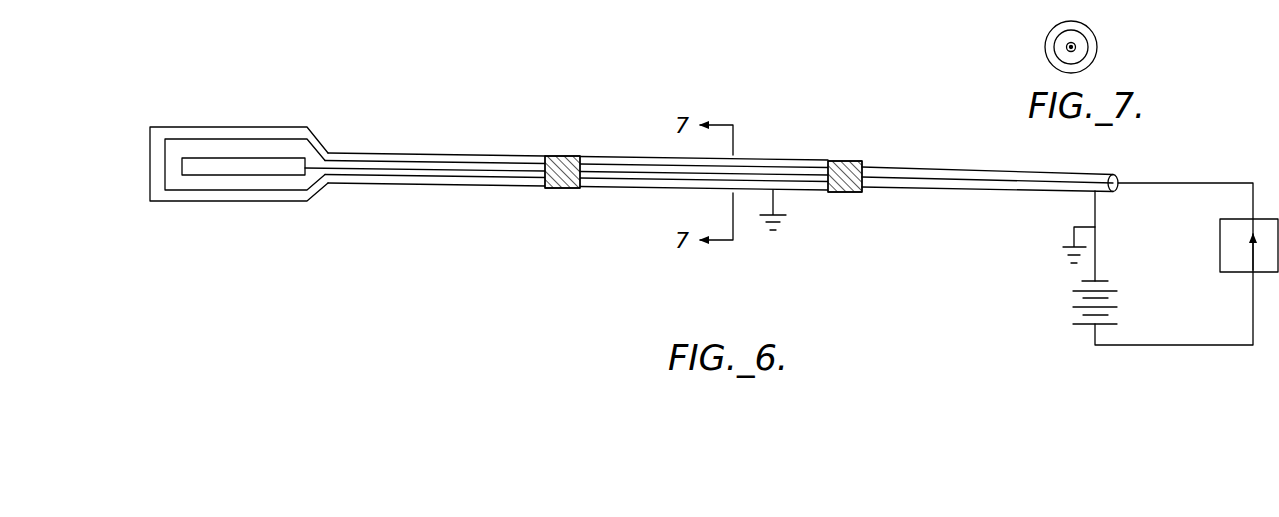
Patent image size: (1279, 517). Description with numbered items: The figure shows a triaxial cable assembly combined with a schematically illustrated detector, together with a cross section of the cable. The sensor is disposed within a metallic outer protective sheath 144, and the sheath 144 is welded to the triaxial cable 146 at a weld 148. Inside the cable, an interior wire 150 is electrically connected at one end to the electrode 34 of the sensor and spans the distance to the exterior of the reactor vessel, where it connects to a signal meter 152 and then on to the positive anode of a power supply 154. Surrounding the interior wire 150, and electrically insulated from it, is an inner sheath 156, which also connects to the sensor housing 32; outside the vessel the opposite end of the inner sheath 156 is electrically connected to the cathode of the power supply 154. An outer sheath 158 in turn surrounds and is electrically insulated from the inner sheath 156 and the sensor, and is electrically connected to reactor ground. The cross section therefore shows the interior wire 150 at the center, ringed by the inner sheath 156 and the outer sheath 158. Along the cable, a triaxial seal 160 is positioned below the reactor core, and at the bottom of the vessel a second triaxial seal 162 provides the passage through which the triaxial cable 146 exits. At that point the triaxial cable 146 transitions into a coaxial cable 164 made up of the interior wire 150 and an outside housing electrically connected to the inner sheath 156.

In FIG. 6, the sensor housing 32 is at (237, 190).
In FIG. 6, the electrode 34 is at (193, 175).
In FIG. 6, the metallic outer protective sheath 144 is at (283, 201).
In FIG. 6, the triaxial cable 146 is at (711, 176).
In FIG. 6, the weld 148 is at (330, 184).
In FIG. 6, the interior wire 150 is at (420, 170).
In FIG. 7, the interior wire 150 is at (1073, 50).
In FIG. 6, the signal meter 152 is at (1220, 230).
In FIG. 6, the power supply 154 is at (1075, 285).
In FIG. 6, the inner sheath 156 is at (472, 178).
In FIG. 7, the inner sheath 156 is at (1086, 53).
In FIG. 6, the outer sheath 158 is at (530, 186).
In FIG. 7, the outer sheath 158 is at (1092, 30).
In FIG. 6, the triaxial seal 160 is at (572, 190).
In FIG. 6, the second triaxial seal 162 is at (836, 193).
In FIG. 6, the coaxial cable 164 is at (913, 190).